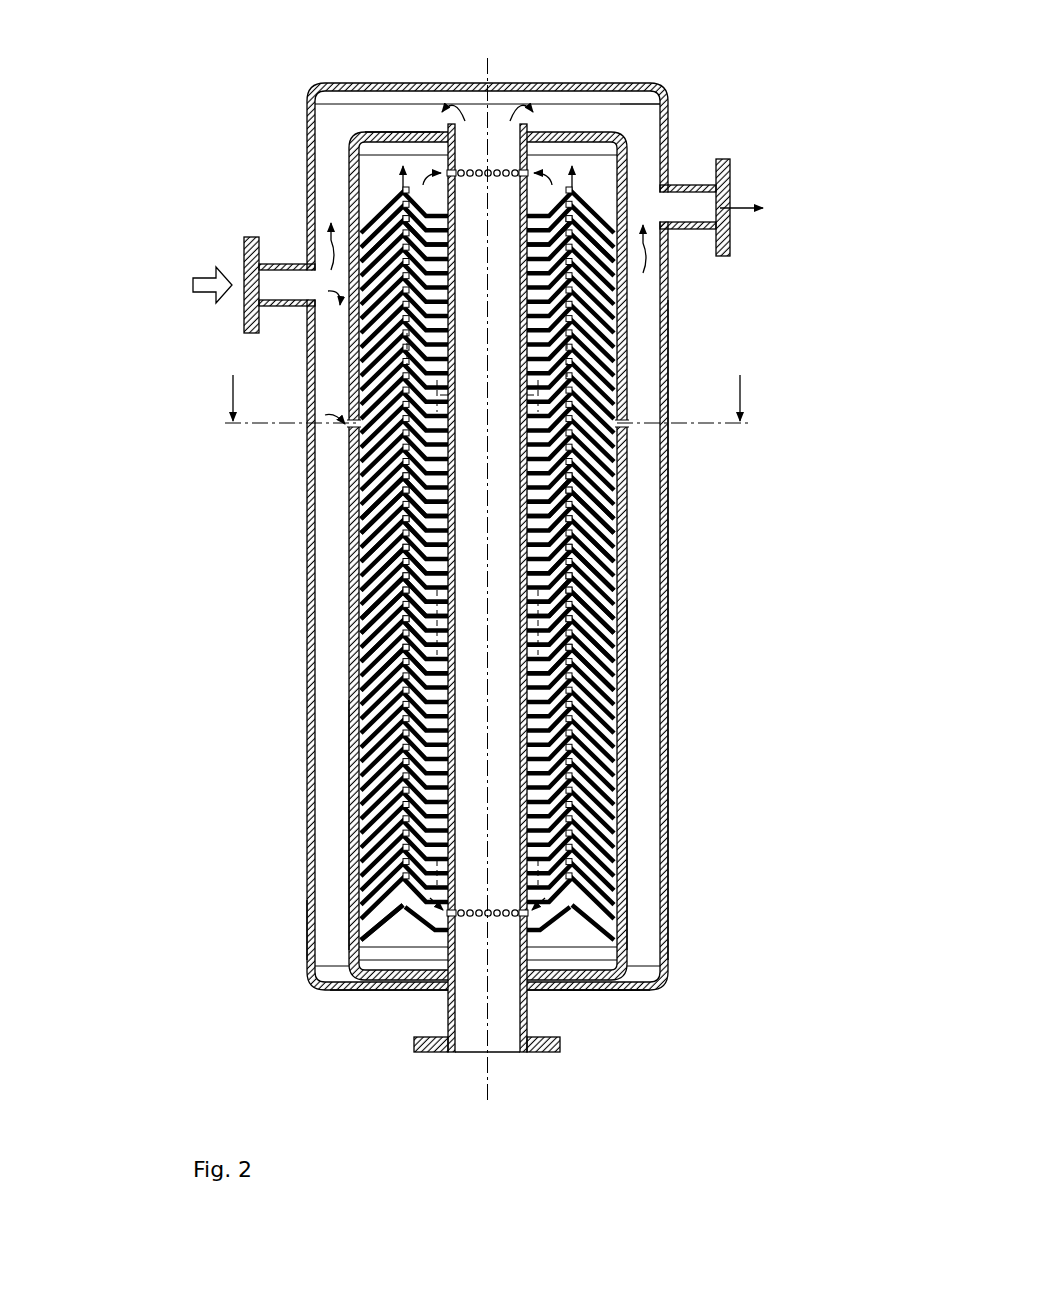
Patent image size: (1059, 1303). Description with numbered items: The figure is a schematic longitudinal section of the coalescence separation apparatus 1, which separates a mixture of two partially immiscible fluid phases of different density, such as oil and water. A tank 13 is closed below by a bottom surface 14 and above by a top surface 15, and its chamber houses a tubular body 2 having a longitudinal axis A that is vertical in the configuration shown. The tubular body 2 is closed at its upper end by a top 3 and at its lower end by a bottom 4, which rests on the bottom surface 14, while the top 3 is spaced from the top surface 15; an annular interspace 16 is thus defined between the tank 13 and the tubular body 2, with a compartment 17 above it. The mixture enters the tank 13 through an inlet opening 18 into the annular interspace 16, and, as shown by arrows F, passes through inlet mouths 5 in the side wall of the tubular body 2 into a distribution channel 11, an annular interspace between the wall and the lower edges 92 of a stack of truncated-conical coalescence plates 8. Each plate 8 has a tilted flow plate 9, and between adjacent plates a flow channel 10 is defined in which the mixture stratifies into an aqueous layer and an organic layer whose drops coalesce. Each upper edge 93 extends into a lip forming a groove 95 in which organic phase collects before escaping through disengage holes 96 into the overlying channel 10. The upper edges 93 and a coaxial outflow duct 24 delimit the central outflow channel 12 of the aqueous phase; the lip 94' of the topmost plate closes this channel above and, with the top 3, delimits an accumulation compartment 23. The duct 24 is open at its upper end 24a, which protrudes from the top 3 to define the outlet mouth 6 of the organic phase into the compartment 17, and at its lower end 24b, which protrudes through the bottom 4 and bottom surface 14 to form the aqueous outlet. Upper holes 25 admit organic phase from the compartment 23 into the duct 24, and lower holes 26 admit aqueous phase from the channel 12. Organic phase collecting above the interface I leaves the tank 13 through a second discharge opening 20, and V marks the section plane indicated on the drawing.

The coalescence separation apparatus 1 is at (245, 86).
The tubular body 2 is at (633, 898).
The top 3 is at (573, 133).
The bottom 4 is at (595, 987).
The inlet mouth 5 is at (347, 428).
The outlet mouth of the organic liquid phase 6 is at (478, 130).
The coalescence plates 8 is at (359, 593).
The flow plate 9 is at (615, 558).
The flow channel 10 is at (343, 610).
The distribution channel 11 is at (347, 867).
The outflow channel 12 is at (565, 670).
The tank 13 is at (671, 967).
The bottom surface 14 is at (347, 988).
The top surface 15 is at (382, 82).
The annular interspace 16 is at (325, 940).
The compartment 17 is at (638, 113).
The inlet opening 18 is at (238, 272).
The second discharge opening 20 is at (717, 217).
The accumulation compartment 23 is at (360, 184).
The outflow duct 24 is at (600, 213).
The upper end of the outflow duct 24a is at (447, 136).
The lower end of the outflow duct 24b is at (577, 947).
The upper holes 25 is at (536, 202).
The lower holes 26 is at (445, 982).
The lower edge 92 is at (627, 590).
The upper edge 93 is at (577, 502).
The groove 95 is at (600, 537).
The disengage hole 96 is at (363, 492).
The lip of the top coalescence plate 94' is at (530, 570).
The longitudinal axis A is at (490, 58).
The interface I is at (308, 218).
The arrows F is at (303, 304).
The section line V- V is at (486, 385).